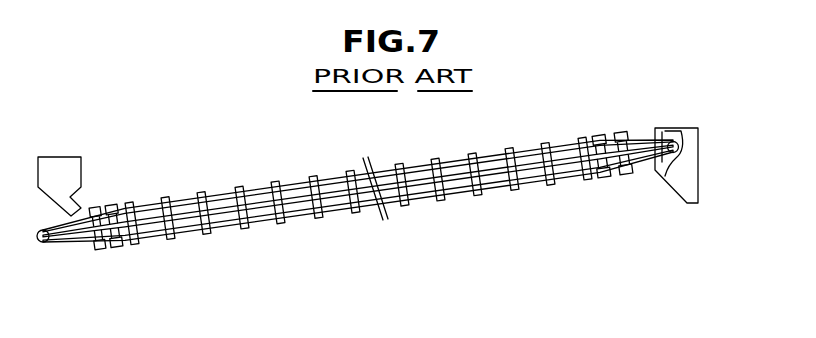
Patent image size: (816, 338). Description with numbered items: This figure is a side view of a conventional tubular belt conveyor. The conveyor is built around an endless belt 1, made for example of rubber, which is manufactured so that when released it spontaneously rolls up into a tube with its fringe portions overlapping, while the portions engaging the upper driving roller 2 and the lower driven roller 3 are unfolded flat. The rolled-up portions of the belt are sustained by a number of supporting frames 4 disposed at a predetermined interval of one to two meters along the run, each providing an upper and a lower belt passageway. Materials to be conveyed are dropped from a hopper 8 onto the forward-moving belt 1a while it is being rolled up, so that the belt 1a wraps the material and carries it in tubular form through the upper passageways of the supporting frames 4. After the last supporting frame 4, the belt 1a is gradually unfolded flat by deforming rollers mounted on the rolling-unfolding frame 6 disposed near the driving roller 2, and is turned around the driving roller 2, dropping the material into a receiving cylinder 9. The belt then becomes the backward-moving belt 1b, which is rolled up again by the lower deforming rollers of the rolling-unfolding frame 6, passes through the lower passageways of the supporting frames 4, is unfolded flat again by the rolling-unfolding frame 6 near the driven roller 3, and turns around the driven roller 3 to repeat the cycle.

The endless belt 1 is at (358, 177).
The forward-moving belt 1a is at (487, 161).
The backward-moving belt 1b is at (422, 197).
The upper driving roller 2 is at (679, 145).
The lower driven roller 3 is at (41, 243).
The supporting frames 4 is at (240, 186).
The rolling-unfolding frame 6 is at (110, 204).
The hopper 8 is at (57, 167).
The receiving cylinder 9 is at (688, 179).